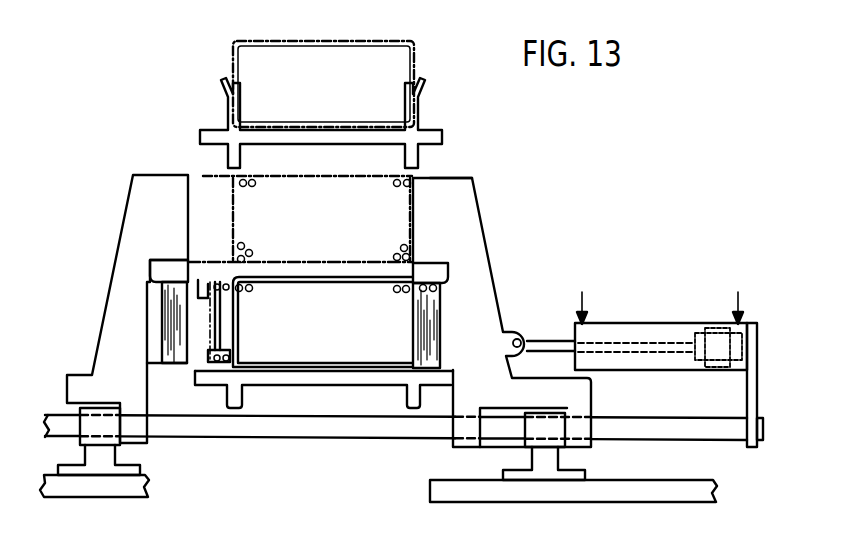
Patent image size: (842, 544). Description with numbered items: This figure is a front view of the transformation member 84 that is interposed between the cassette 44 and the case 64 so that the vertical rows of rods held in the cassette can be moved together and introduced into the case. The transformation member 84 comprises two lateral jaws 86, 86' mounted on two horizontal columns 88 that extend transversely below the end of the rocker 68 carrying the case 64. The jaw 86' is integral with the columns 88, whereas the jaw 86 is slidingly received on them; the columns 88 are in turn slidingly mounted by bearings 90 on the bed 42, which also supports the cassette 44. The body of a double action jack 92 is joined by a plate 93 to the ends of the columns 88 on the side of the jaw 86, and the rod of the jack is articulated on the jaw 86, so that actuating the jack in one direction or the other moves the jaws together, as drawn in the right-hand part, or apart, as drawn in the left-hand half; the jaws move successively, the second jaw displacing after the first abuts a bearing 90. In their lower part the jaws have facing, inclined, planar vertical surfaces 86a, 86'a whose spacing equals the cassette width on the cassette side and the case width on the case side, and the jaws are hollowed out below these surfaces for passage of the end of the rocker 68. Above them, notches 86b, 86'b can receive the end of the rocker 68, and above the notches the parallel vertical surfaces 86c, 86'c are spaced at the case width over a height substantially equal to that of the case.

The planar vertical surface 86'c is at (276, 108).
The notch 86'b is at (125, 211).
The lateral jaw 86' is at (232, 309).
The planar vertical surface 86'a is at (116, 303).
The lateral jaw 86 is at (502, 312).
The planar vertical surface 86a is at (438, 312).
The notch 86b is at (447, 262).
The planar vertical surface 86c is at (420, 180).
The transformation member 84 is at (532, 176).
The case 64 is at (352, 277).
The cassette 44 is at (205, 345).
The rocker 68 is at (367, 377).
The horizontal columns 88 is at (278, 430).
The bearing 90 is at (70, 408).
The bed 42 is at (665, 488).
The double action jack 92 is at (648, 323).
The plate 93 is at (748, 393).